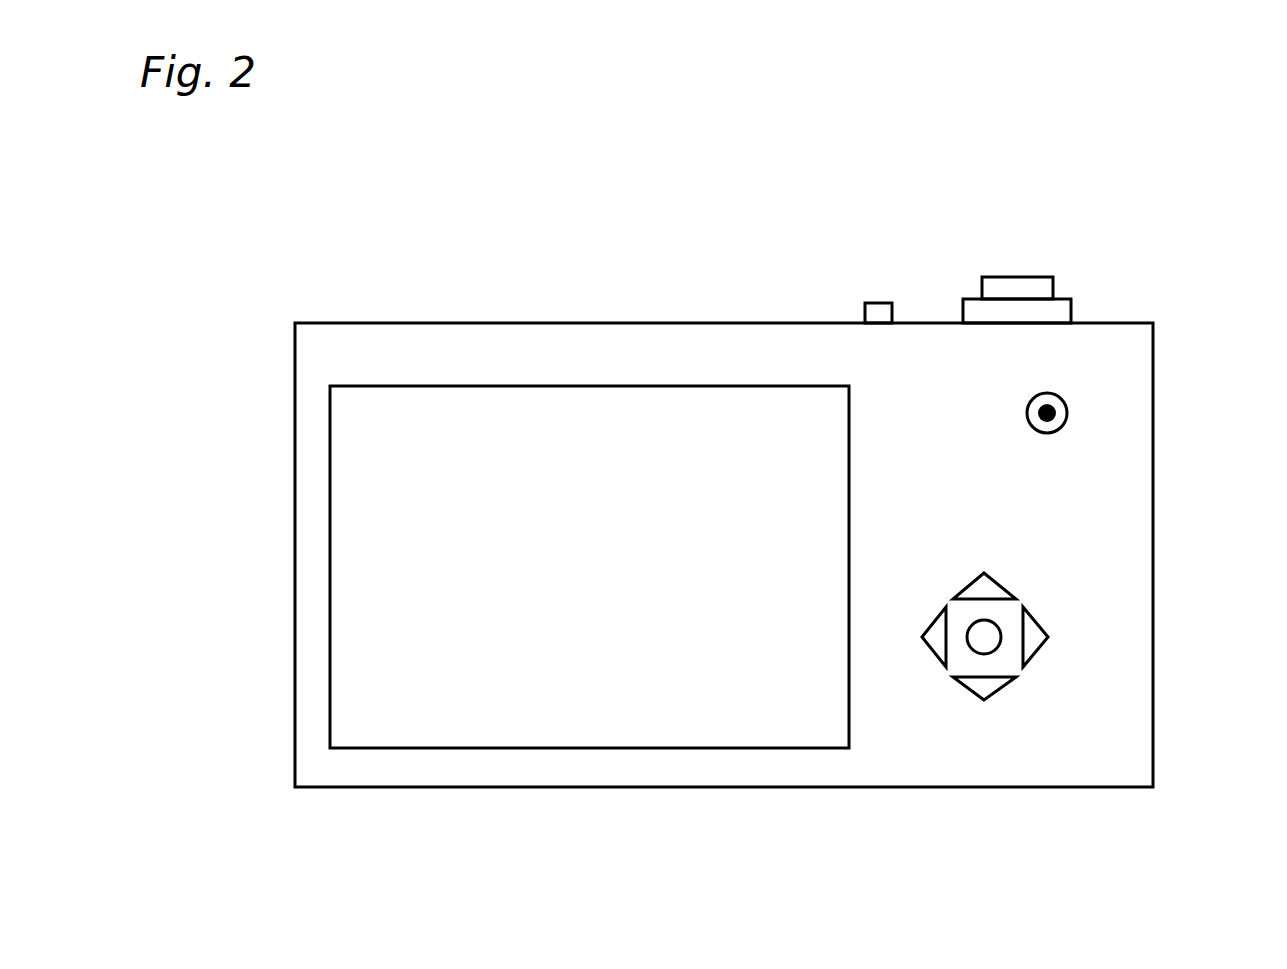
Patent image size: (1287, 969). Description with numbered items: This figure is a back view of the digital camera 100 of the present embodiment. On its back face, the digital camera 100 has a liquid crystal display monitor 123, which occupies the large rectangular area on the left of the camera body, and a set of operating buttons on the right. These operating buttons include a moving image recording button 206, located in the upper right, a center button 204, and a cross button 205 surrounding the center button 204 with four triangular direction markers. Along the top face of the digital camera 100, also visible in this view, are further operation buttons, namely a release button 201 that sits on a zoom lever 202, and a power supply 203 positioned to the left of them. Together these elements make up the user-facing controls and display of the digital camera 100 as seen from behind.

The digital camera 100 is at (327, 177).
The liquid crystal display monitor 123 is at (430, 722).
The release button 201 is at (1040, 285).
The zoom lever 202 is at (1060, 315).
The power supply 203 is at (865, 302).
The center button 204 is at (985, 640).
The cross button 205 is at (985, 685).
The moving image recording button 206 is at (1067, 402).